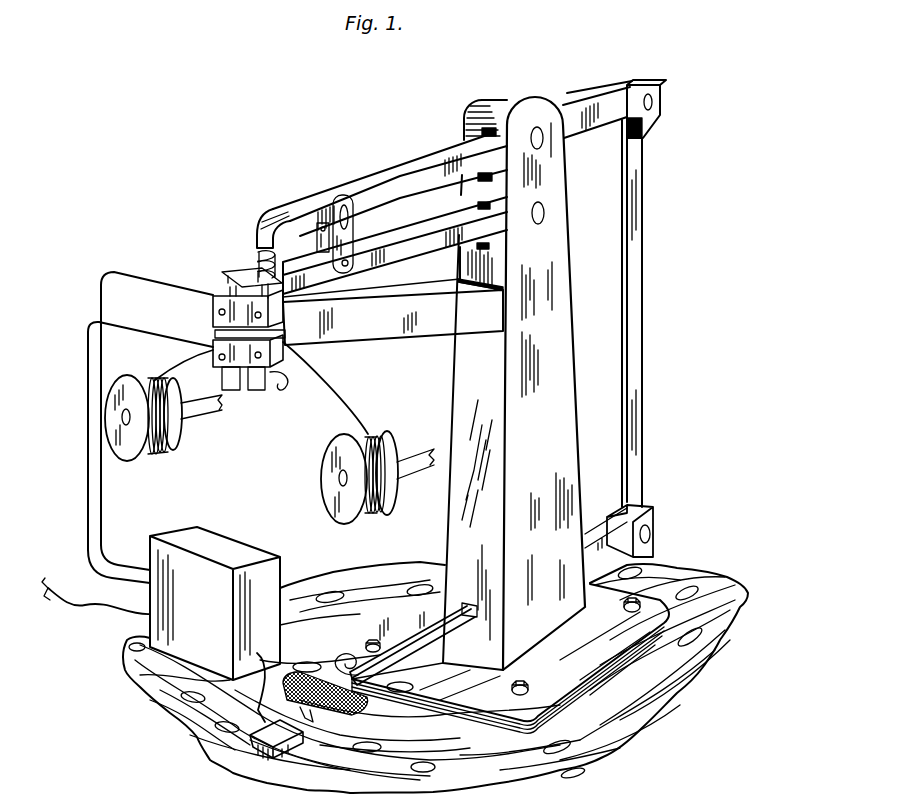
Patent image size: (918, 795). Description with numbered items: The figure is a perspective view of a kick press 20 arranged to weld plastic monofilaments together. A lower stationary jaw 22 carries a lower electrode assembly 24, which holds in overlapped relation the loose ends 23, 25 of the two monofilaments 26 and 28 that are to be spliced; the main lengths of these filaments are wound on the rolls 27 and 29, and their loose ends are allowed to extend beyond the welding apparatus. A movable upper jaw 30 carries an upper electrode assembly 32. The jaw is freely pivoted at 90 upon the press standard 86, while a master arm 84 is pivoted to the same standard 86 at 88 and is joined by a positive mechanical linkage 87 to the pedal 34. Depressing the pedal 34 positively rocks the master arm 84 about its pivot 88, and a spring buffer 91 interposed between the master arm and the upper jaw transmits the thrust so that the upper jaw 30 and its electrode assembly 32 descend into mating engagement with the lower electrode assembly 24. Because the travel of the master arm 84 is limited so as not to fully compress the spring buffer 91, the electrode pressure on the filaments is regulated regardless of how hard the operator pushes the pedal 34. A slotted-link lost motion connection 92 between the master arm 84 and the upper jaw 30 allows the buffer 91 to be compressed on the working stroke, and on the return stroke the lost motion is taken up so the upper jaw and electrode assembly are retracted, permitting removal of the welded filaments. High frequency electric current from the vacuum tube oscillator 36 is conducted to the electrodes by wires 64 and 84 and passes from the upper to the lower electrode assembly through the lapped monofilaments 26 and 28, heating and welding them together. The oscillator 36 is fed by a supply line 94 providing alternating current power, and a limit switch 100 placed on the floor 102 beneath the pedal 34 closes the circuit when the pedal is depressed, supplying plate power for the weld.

The kick press 20 is at (662, 395).
The lower stationary jaw 22 is at (237, 377).
The end of monofilament 23 is at (280, 383).
The lower electrode assembly 24 is at (262, 380).
The end of monofilament 25 is at (223, 330).
The monofilament 26 is at (177, 360).
The roll 27 is at (127, 463).
The monofilament 28 is at (330, 383).
The roll 29 is at (343, 520).
The movable upper jaw 30 is at (237, 293).
The upper electrode assembly 32 is at (283, 318).
The pedal 34 is at (360, 713).
The vacuum tube oscillator 36 is at (215, 603).
The wire 64 is at (103, 507).
The master arm 84 is at (405, 163).
The press standard 86 is at (553, 263).
The positive mechanical linkage 87 is at (653, 545).
The pivot 88 is at (540, 127).
The pivot 90 is at (545, 206).
The spring buffer 91 is at (252, 257).
The slotted-link lost motion connection 92 is at (353, 217).
The supply line 94 is at (43, 610).
The limit switch 100 is at (293, 743).
The floor 102 is at (513, 737).